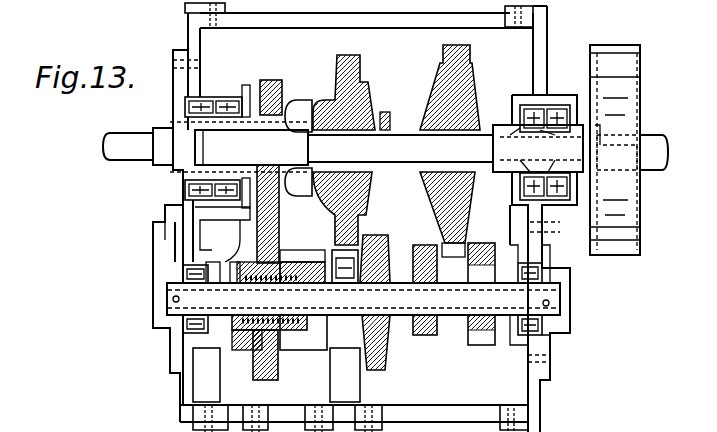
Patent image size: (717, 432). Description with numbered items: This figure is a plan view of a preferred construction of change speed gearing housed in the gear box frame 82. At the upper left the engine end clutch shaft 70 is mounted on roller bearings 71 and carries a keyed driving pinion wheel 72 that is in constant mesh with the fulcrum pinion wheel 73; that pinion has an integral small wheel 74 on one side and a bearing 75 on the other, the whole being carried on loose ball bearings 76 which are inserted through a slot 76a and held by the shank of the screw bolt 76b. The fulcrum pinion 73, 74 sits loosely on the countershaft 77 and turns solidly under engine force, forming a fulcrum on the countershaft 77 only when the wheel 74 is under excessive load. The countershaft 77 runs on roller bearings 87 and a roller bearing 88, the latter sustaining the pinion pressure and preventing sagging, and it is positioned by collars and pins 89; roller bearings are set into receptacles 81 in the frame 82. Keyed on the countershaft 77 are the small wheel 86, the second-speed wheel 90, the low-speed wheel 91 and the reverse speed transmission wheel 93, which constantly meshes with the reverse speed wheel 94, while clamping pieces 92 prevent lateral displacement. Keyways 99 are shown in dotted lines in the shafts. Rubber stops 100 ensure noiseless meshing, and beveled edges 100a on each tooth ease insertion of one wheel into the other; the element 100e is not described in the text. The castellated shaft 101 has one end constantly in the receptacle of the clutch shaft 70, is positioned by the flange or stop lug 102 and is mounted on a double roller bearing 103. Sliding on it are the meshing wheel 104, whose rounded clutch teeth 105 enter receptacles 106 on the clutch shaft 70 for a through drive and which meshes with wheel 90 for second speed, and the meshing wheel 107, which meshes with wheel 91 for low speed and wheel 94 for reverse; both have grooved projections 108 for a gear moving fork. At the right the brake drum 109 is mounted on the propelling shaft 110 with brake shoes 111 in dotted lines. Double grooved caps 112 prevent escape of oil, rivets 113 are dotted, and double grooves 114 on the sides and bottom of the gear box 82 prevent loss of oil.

The engine end clutch shaft 70 is at (138, 146).
The roller bearings 71 is at (194, 133).
The driving pinion wheel 72 is at (270, 87).
The fulcrum pinion wheel 73 is at (280, 214).
The small wheel 74 is at (289, 308).
The bearing 75 is at (253, 253).
The loose ball bearings 76 is at (269, 322).
The slot 76a is at (157, 240).
The screw bolt 76b is at (192, 234).
The countershaft 77 is at (363, 299).
The receptacles 81 is at (276, 375).
The gear box frame 82 is at (360, 219).
The small wheel 86 is at (303, 352).
The roller bearings 87 is at (336, 305).
The roller bearing 88 is at (345, 266).
The collars and pins 89 is at (368, 322).
The second-speed wheel 90 is at (376, 353).
The low-speed wheel 91 is at (425, 345).
The clamping pieces 92 is at (319, 219).
The reverse speed transmission wheel 93 is at (481, 347).
The reverse speed wheel 94 is at (481, 254).
The keyways 99 is at (389, 214).
The rubber stops 100 is at (413, 283).
The beveled edges 100a is at (454, 217).
The gear portion 100e is at (379, 60).
The castellated shaft 101 is at (378, 148).
The flange or stop lug 102 is at (524, 151).
The double roller bearing 103 is at (527, 150).
The meshing wheel 104 is at (344, 142).
The rounded clutch teeth 105 is at (309, 84).
The receptacles 106 is at (298, 139).
The meshing wheel 107 is at (443, 151).
The grooved projections 108 is at (395, 111).
The brake drum 109 is at (611, 230).
The propelling shaft 110 is at (642, 147).
The brake shoes 111 is at (579, 63).
The double grooved caps 112 is at (358, 217).
The rivets 113 is at (544, 223).
The double grooves 114 is at (356, 216).